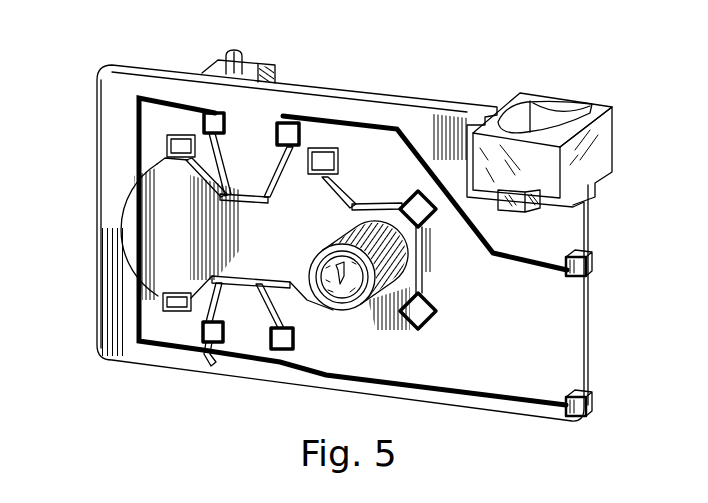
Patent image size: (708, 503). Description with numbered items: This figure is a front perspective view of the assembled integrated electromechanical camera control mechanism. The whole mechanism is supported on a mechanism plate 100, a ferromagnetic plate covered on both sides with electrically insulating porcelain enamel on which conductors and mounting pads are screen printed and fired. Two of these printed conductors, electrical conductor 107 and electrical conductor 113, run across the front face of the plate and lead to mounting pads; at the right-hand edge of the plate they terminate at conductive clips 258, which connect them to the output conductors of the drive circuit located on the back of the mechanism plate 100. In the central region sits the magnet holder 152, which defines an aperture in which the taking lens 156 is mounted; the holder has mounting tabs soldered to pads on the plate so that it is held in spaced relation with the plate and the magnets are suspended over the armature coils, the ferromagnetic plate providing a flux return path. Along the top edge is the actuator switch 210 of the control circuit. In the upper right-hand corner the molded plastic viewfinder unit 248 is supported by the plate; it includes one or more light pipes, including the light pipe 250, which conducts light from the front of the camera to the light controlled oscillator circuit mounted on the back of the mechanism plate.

The mechanism plate 100 is at (568, 324).
The electrical conductor 107 is at (468, 380).
The electrical conductor 113 is at (532, 271).
The magnet holder 152 is at (134, 216).
The taking lens 156 is at (342, 236).
The actuator switch 210 is at (262, 72).
The viewfinder unit 248 is at (560, 100).
The light pipe 250 is at (512, 213).
The conductive clips 258 is at (593, 266).